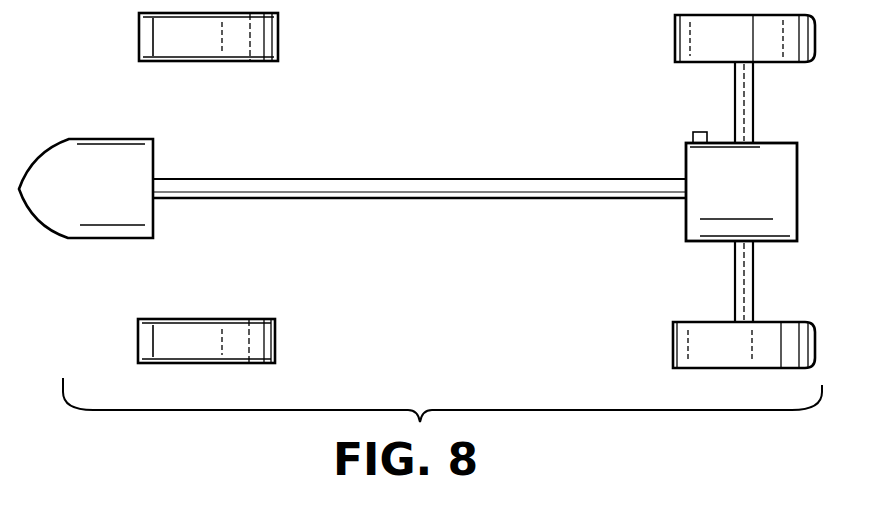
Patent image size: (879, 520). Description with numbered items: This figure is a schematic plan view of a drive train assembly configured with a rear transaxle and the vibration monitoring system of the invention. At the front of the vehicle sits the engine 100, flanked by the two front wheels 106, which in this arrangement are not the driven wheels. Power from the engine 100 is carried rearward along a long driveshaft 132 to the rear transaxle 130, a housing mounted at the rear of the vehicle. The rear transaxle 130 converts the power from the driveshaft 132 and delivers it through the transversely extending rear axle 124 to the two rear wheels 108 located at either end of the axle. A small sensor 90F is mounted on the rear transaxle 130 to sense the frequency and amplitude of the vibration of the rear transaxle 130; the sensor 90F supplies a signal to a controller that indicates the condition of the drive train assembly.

The engine 100 is at (100, 232).
The front wheels 106 is at (278, 42).
The rear wheels 108 is at (680, 40).
The rear axle 124 is at (755, 111).
The rear transaxle 130 is at (697, 242).
The driveshaft 132 is at (432, 196).
The sensor 90F is at (693, 132).